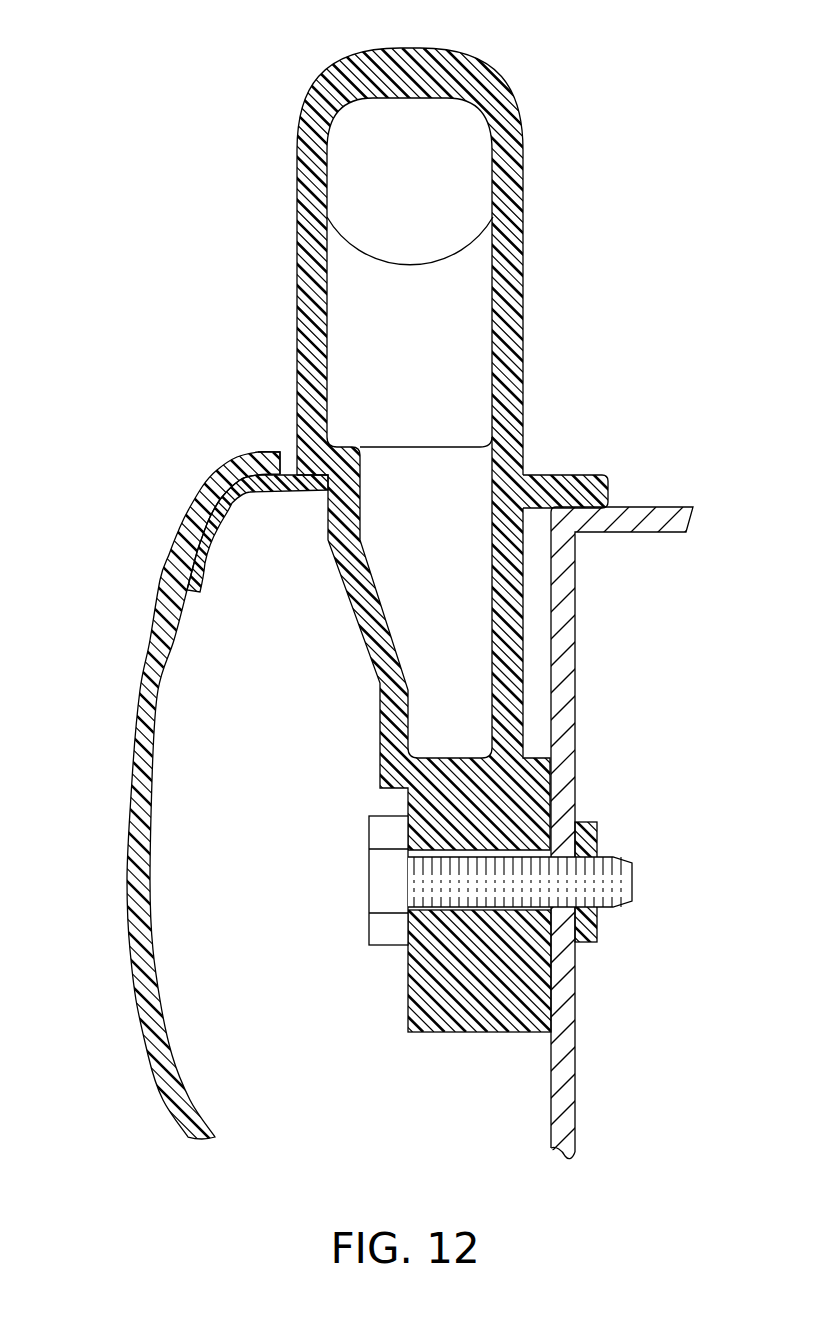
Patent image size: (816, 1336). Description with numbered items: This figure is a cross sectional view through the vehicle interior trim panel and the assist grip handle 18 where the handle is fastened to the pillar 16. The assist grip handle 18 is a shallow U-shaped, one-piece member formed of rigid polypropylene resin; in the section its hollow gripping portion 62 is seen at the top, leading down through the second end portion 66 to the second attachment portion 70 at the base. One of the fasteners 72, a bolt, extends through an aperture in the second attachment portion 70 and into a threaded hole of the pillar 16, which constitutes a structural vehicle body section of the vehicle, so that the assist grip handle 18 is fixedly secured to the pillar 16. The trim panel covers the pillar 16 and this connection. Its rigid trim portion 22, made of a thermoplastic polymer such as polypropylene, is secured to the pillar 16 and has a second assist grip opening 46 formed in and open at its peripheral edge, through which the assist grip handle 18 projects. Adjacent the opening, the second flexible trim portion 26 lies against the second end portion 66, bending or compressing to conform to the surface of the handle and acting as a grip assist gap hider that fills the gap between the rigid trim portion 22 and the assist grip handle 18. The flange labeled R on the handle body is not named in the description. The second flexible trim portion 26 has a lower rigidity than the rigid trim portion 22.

The pillar 16 is at (552, 1104).
The assist grip handle 18 is at (296, 106).
The rigid trim portion 22 is at (140, 694).
The second flexible trim portion 26 is at (236, 500).
The second assist grip opening 46 is at (282, 468).
The gripping portion 62 is at (458, 52).
The second end portion 66 is at (516, 371).
The second attachment portion 70 is at (462, 1033).
The fasteners 72 is at (368, 880).
The radial flange R is at (556, 498).